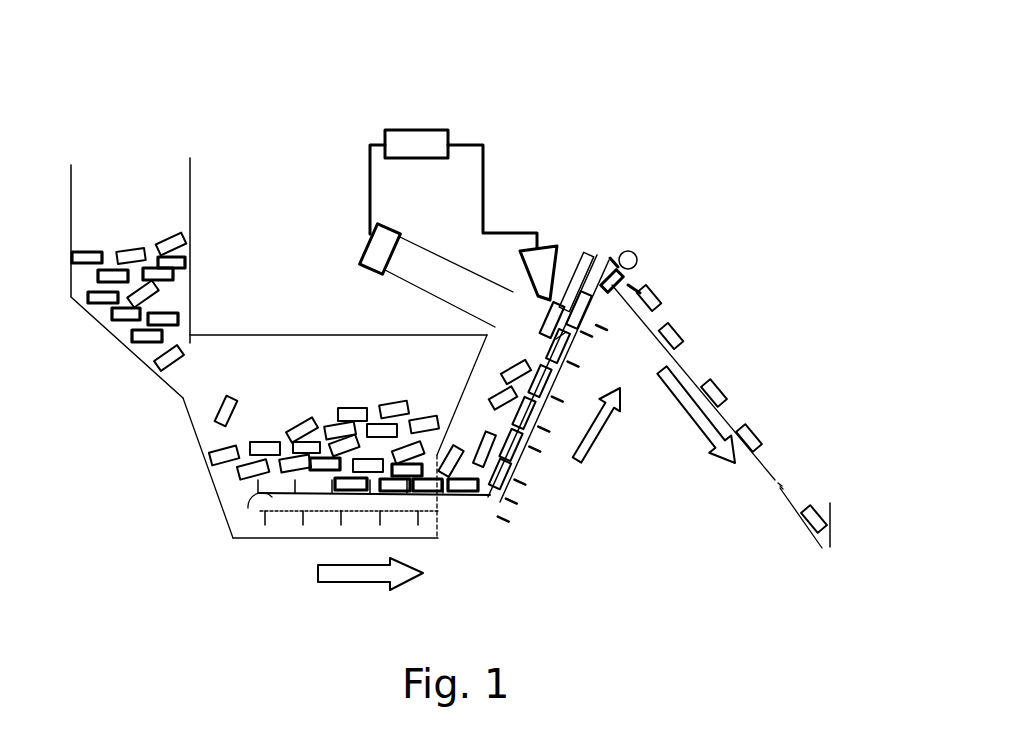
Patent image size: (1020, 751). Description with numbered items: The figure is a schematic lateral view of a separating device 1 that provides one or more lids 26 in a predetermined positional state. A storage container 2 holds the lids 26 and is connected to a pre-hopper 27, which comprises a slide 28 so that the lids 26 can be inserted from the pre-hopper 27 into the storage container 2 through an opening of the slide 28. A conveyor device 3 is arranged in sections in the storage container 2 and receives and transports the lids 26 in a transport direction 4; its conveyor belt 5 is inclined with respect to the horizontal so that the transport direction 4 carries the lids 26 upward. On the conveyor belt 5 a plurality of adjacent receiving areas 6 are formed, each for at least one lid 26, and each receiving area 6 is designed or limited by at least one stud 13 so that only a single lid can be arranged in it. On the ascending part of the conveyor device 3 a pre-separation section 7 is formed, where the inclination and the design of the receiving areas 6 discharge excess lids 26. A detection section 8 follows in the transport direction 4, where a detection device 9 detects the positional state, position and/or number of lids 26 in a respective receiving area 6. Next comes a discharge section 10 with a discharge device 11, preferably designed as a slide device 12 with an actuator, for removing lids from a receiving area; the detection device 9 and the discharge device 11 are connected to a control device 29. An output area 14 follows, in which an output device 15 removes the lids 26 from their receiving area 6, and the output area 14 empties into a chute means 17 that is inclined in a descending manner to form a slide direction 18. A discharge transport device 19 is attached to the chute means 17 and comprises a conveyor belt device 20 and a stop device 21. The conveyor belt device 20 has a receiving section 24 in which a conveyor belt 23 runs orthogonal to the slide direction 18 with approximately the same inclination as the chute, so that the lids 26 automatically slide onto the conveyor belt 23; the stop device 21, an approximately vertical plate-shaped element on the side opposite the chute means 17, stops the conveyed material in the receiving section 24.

The separating device 1 is at (532, 68).
The storage container 2 is at (195, 420).
The conveyor device 3 is at (495, 498).
The transport direction 4 is at (338, 586).
The conveyor belt 5 is at (275, 494).
The receiving area 6 is at (274, 483).
The pre-separation section 7 is at (542, 427).
The detection section 8 is at (567, 333).
The detection device 9 is at (388, 224).
The discharge section 10 is at (595, 322).
The discharge device 11 is at (539, 233).
The slide device 12 is at (540, 250).
The stud 13 is at (300, 523).
The output area 14 is at (637, 268).
The output device 15 is at (590, 250).
The chute means 17 is at (727, 413).
The slide direction 18 is at (702, 432).
The discharge transport device 19 is at (802, 565).
The conveyor belt device 20 is at (788, 508).
The stop device 21 is at (832, 517).
The conveyor belt 23 is at (783, 485).
The receiving section 24 is at (783, 488).
The lid 26 is at (305, 420).
The pre-hopper 27 is at (80, 238).
The slide 28 is at (190, 336).
The control device 29 is at (407, 143).